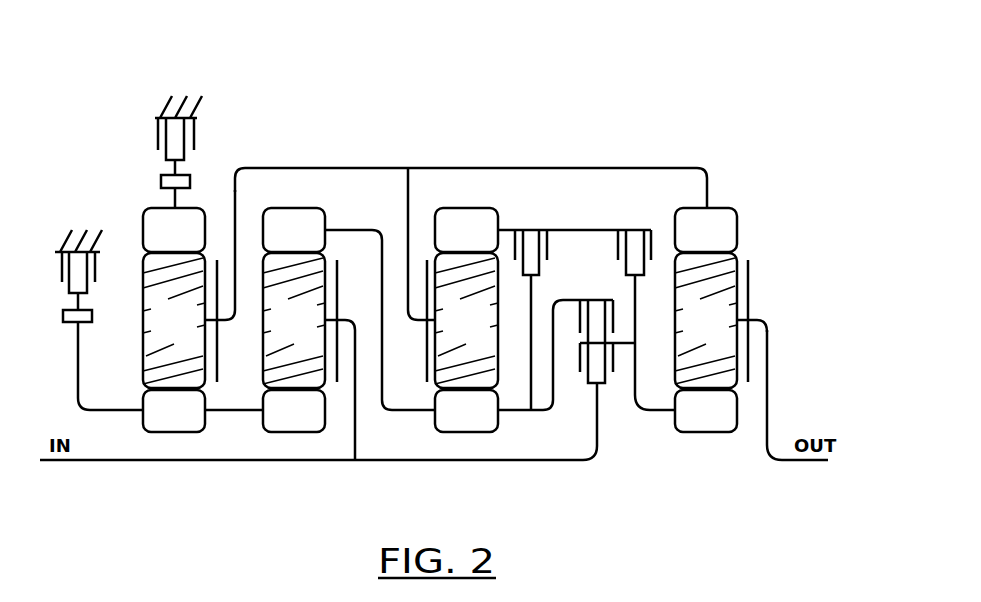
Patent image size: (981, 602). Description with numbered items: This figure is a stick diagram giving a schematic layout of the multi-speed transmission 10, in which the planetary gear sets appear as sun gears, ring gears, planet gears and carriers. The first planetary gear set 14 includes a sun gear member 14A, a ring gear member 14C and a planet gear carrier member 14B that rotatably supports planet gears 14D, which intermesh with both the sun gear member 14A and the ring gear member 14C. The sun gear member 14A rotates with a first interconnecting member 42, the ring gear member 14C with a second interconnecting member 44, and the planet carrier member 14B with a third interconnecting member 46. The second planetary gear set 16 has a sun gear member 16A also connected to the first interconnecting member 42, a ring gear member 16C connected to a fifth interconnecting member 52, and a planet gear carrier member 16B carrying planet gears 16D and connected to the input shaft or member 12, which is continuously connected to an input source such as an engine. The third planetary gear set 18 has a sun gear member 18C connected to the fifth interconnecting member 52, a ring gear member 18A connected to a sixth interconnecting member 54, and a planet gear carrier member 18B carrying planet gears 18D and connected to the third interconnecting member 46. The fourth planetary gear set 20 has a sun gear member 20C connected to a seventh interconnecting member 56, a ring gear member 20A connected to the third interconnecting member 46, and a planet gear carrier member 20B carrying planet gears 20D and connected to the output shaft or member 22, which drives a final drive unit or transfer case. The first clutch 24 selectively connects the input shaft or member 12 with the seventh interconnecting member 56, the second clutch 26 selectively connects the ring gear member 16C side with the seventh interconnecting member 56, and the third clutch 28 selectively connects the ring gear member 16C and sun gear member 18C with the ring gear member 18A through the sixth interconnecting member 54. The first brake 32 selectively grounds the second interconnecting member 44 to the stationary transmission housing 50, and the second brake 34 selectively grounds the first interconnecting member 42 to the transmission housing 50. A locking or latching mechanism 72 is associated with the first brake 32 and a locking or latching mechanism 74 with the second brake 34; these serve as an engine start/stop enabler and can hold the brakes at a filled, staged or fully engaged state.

The multi-speed transmission 10 is at (712, 92).
The input shaft or member 12 is at (75, 462).
The first planetary gear set 14 is at (200, 359).
The sun gear member 14A is at (152, 427).
The planet gear carrier member 14B is at (218, 360).
The ring gear member 14C is at (152, 245).
The planet gears 14D is at (152, 330).
The second planetary gear set 16 is at (321, 360).
The sun gear member 16A is at (272, 427).
The planet gear carrier member 16B is at (338, 277).
The ring gear member 16C is at (272, 245).
The planetary gears 16D is at (272, 330).
The third planetary gear set 18 is at (475, 348).
The ring gear member 18A is at (444, 245).
The planet gear carrier member 18B is at (420, 363).
The sun gear member 18C is at (444, 427).
The planet gears 18D is at (444, 330).
The fourth planetary gear set 20 is at (742, 355).
The ring gear member 20A is at (684, 245).
The planet gear carrier member 20B is at (750, 265).
The sun gear member 20C is at (684, 427).
The planet gears 20D is at (684, 330).
The output shaft or member 22 is at (809, 462).
The first clutch 24 is at (583, 376).
The second clutch 26 is at (578, 300).
The third clutch 28 is at (548, 250).
The first brake 32 is at (157, 141).
The second brake 34 is at (60, 268).
The first shaft or interconnecting member 42 is at (76, 345).
The second shaft or interconnecting member 44 is at (172, 167).
The third shaft or interconnecting member 46 is at (526, 168).
The transmission housing 50 is at (160, 112).
The fifth shaft or interconnecting member 52 is at (422, 408).
The sixth shaft or interconnecting member 54 is at (593, 230).
The seventh shaft or interconnecting member 56 is at (641, 398).
The locking or latching mechanism 72 is at (160, 182).
The locking or latching mechanism 74 is at (93, 316).